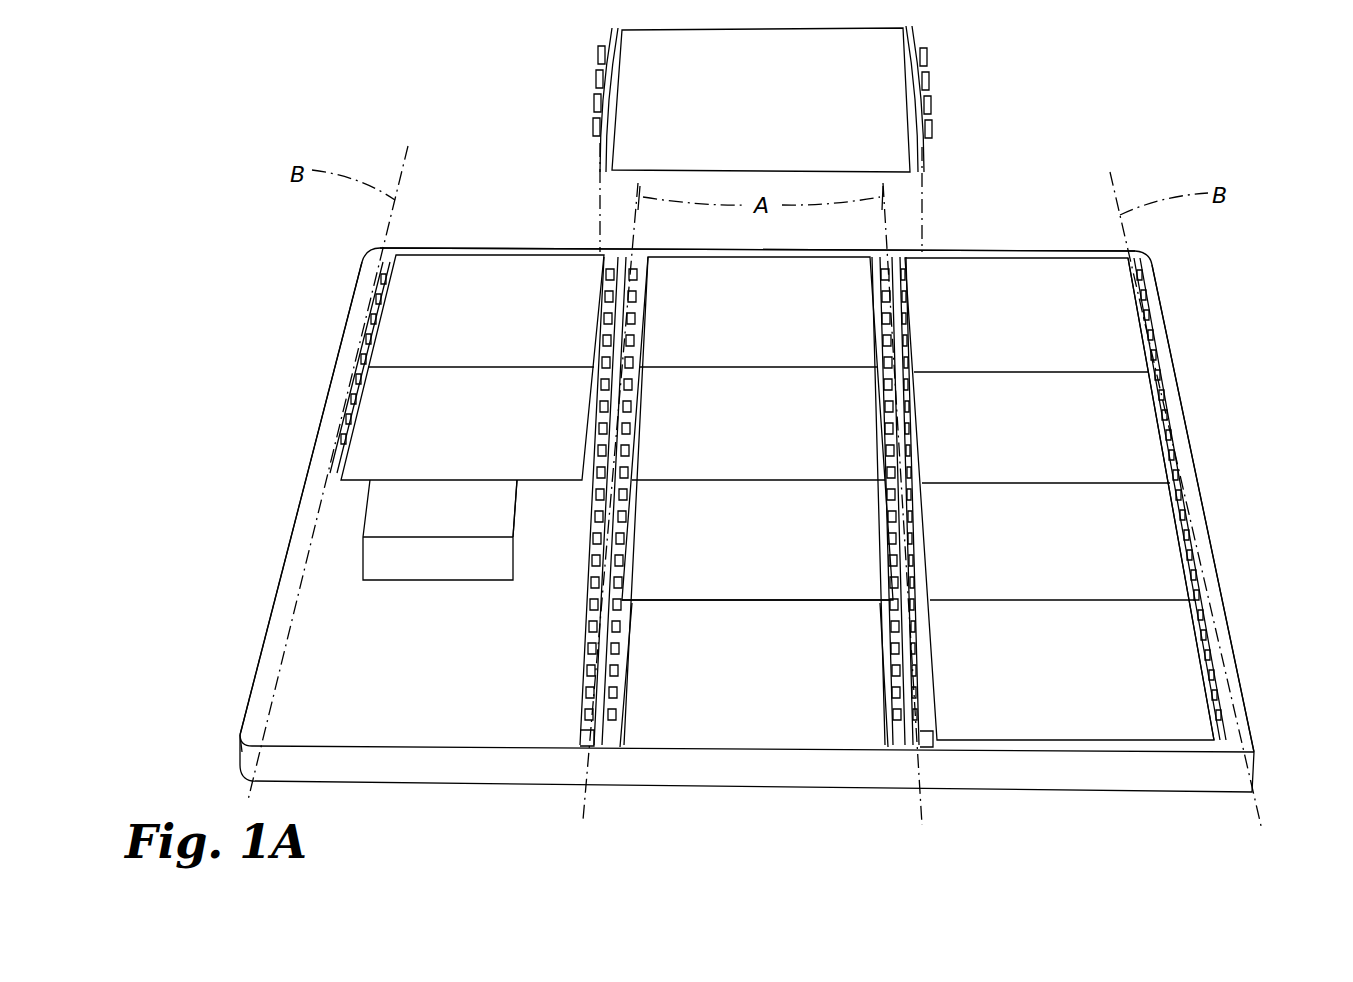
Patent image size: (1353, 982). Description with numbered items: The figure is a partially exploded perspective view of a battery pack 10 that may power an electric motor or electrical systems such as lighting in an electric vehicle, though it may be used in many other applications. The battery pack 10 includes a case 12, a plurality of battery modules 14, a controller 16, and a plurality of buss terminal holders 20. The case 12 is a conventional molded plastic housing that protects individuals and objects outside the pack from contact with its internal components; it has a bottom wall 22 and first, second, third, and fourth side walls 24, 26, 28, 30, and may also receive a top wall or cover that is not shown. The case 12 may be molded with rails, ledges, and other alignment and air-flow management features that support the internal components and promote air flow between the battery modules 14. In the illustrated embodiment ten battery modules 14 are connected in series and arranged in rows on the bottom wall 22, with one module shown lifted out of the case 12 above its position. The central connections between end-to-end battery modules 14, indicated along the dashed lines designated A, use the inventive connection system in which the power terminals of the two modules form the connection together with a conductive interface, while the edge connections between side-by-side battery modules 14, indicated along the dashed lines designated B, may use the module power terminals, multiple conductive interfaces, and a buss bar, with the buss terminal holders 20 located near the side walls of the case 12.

The battery pack 10 is at (1078, 142).
The case 12 is at (1208, 586).
The battery module 14 is at (570, 280).
The controller 16 is at (378, 512).
The buss terminal holder 20 is at (600, 736).
The bottom wall 22 is at (773, 691).
The first side wall 24 is at (1121, 776).
The second side wall 26 is at (1240, 685).
The third side wall 28 is at (955, 252).
The fourth side wall 30 is at (258, 655).